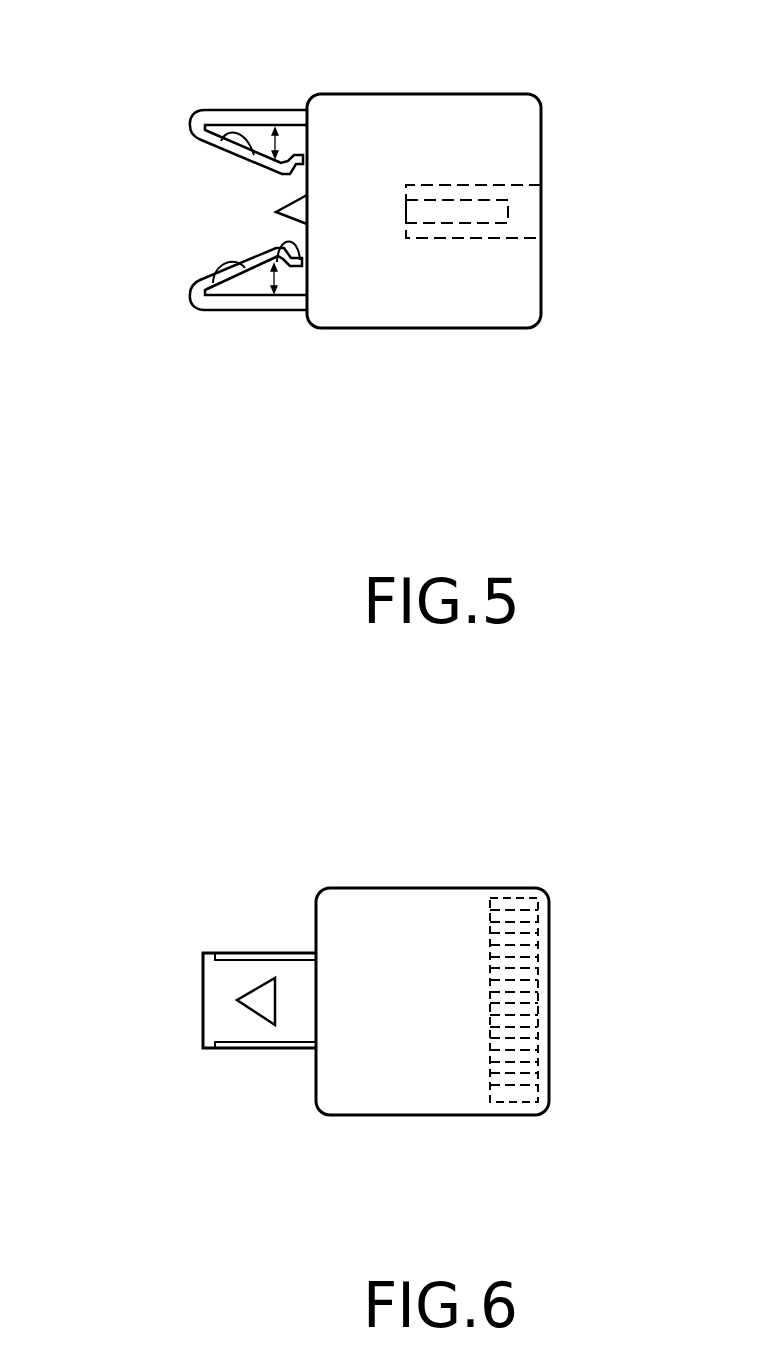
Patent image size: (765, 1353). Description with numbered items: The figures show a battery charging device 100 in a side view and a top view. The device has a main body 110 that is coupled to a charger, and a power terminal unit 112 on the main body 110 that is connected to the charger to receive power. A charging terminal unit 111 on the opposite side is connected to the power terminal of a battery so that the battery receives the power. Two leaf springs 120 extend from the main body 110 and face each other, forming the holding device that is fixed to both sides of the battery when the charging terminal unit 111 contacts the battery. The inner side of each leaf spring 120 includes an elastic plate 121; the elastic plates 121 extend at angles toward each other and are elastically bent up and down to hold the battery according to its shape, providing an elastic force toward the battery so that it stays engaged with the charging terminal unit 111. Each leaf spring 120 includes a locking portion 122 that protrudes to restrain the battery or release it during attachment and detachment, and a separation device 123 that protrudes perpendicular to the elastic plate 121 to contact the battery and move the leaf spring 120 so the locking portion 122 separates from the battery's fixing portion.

In FIG. 5, the battery charging device 100 is at (360, 229).
In FIG. 5, the main body 110 is at (418, 306).
In FIG. 6, the main body 110 is at (412, 908).
In FIG. 5, the charging terminal unit 111 is at (292, 213).
In FIG. 5, the power terminal unit 112 is at (525, 212).
In FIG. 6, the power terminal unit 112 is at (530, 1001).
In FIG. 5, the leaf spring 120 is at (247, 108).
In FIG. 6, the leaf spring 120 is at (218, 1007).
In FIG. 5, the elastic plate 121 is at (193, 288).
In FIG. 5, the locking portion 122 is at (292, 275).
In FIG. 5, the separation device 123 is at (238, 262).